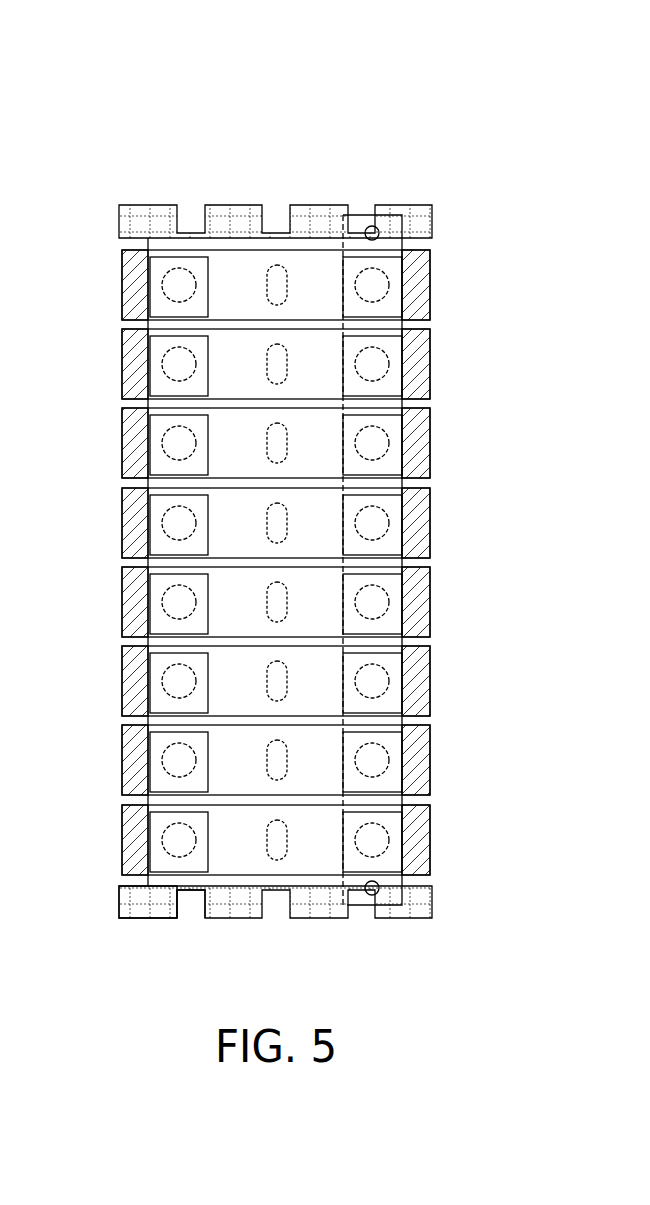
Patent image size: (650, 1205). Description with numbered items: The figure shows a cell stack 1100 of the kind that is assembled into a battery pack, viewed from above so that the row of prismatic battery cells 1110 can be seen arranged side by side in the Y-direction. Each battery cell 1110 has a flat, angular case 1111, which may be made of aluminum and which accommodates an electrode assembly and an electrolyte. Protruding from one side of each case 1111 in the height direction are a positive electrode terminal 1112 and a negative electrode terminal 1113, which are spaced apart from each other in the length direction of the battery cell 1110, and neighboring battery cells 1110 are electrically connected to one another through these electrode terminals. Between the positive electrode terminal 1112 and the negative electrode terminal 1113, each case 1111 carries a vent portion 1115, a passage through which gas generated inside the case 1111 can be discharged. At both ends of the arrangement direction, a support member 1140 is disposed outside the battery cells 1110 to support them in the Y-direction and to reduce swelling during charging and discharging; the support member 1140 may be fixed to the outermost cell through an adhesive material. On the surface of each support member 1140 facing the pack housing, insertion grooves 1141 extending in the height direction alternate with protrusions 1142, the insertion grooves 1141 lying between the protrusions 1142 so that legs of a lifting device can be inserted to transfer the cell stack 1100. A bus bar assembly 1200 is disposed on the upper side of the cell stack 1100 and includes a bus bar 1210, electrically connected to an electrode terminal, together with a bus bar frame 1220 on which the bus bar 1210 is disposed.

The cell stack 1100 is at (158, 113).
The battery cell 1110 is at (432, 280).
The case 1111 is at (123, 362).
The positive electrode terminal 1112 is at (180, 447).
The negative electrode terminal 1113 is at (378, 443).
The vent portion 1115 is at (277, 262).
The support member 1140 is at (417, 220).
The insertion groove 1141 is at (190, 892).
The protrusion 1142 is at (150, 918).
The bus bar assembly 1200 is at (398, 542).
The bus bar 1210 is at (390, 747).
The bus bar frame 1220 is at (403, 680).